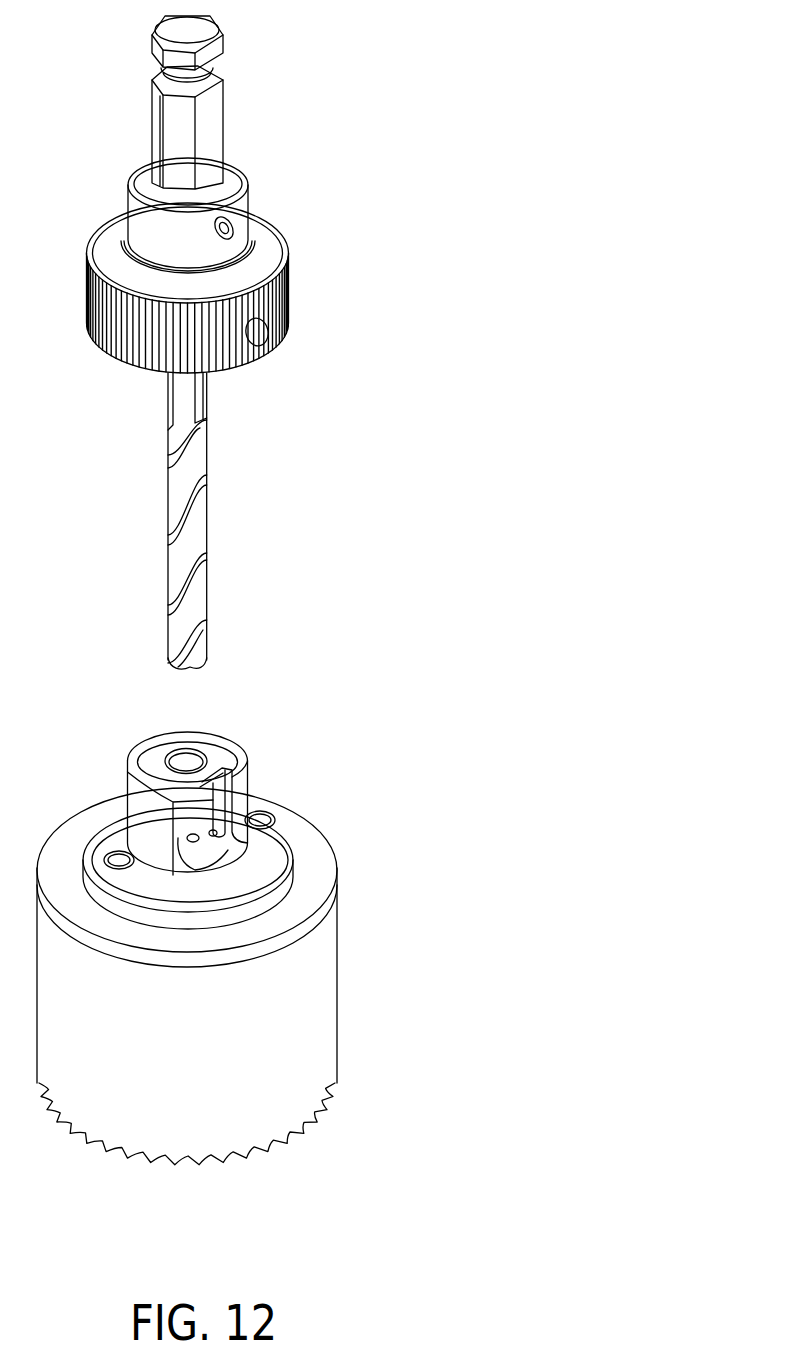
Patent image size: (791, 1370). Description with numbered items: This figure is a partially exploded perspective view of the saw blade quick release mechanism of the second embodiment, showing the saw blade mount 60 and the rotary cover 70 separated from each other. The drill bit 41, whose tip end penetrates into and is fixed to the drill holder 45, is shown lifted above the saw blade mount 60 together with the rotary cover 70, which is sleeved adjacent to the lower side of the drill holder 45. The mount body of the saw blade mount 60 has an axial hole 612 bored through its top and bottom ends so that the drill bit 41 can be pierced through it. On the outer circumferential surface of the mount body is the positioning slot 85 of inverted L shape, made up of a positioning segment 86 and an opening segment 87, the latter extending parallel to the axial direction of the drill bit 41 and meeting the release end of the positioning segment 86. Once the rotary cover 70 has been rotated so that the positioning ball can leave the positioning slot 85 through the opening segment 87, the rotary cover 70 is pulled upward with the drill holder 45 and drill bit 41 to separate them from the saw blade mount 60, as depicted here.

The drill holder 45 is at (250, 102).
The rotary cover 70 is at (273, 300).
The drill bit 41 is at (200, 542).
The saw blade mount 60 is at (260, 742).
The axial hole 612 is at (165, 760).
The positioning slot 85 is at (405, 785).
The opening segment 87 is at (220, 810).
The positioning segment 86 is at (207, 843).